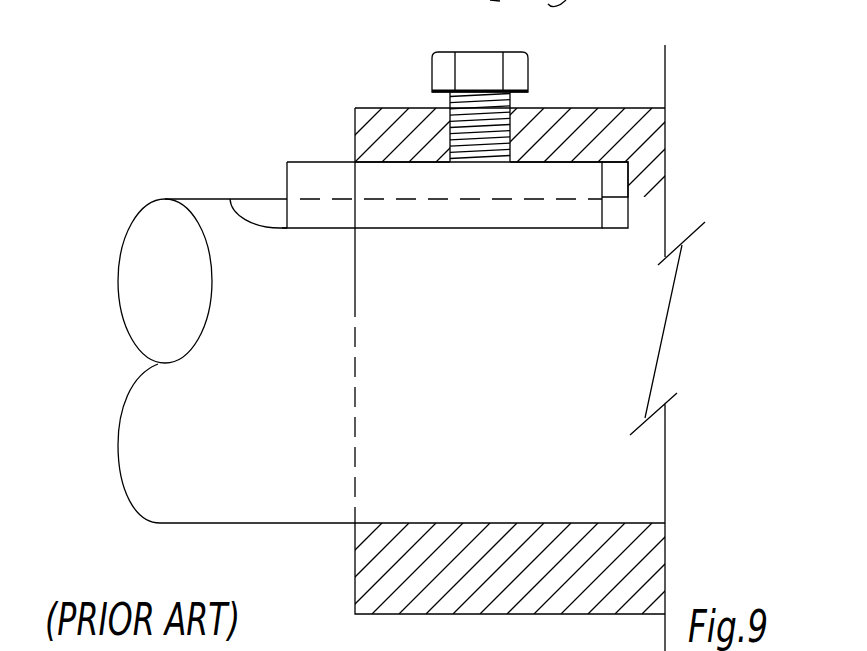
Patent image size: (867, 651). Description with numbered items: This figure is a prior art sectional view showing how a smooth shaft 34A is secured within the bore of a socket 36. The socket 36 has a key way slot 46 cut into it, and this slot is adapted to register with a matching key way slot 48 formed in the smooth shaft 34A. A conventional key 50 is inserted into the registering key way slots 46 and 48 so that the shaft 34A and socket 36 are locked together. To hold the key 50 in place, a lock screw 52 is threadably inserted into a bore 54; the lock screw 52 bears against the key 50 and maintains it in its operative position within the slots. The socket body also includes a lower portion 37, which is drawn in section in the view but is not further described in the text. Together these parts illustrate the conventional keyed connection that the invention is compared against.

The shaft 34A is at (200, 186).
The socket 36 is at (587, 108).
The lower mounting plate 37 is at (461, 522).
The key way slot 46 is at (620, 177).
The key way slot 48 is at (273, 210).
The key 50 is at (307, 188).
The lock screw 52 is at (458, 52).
The bore 54 is at (450, 143).